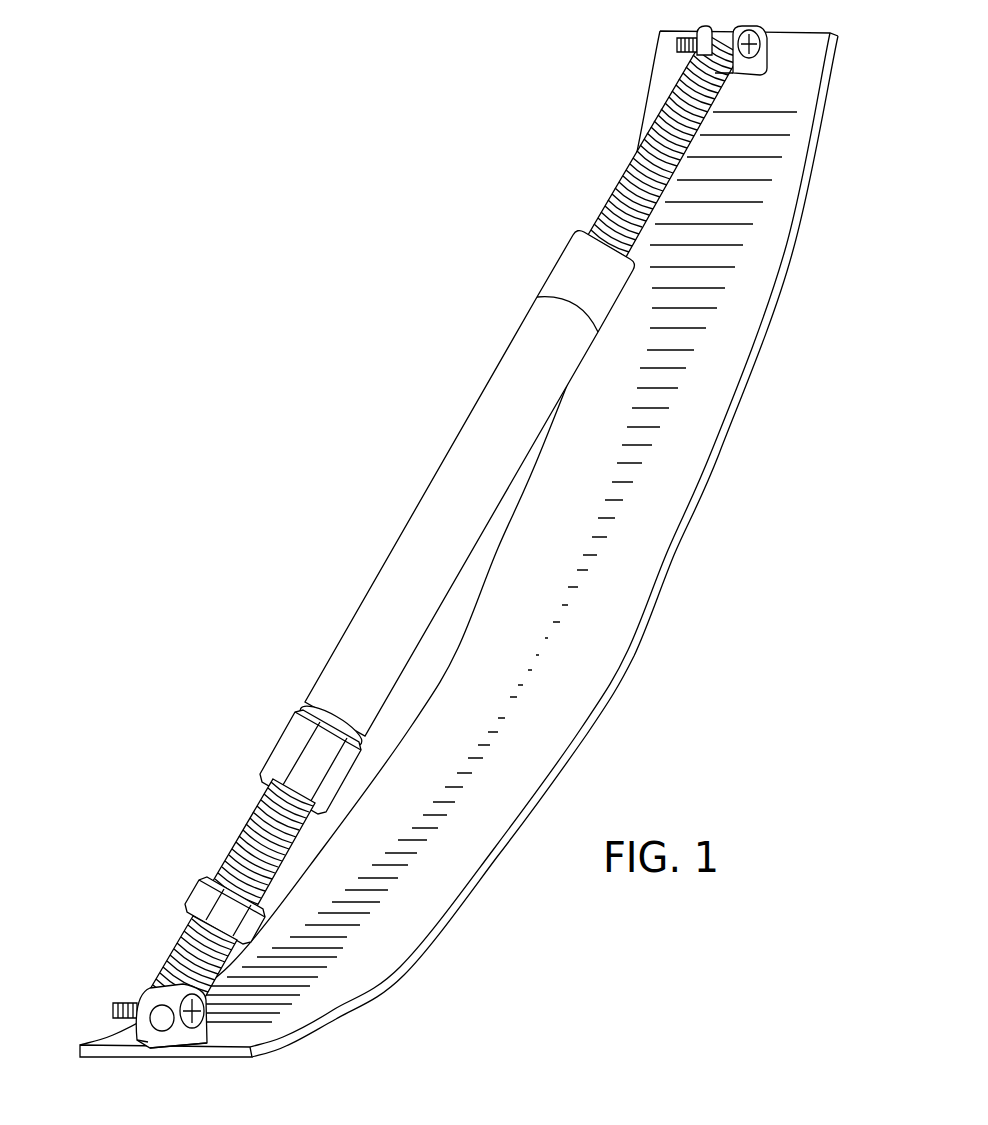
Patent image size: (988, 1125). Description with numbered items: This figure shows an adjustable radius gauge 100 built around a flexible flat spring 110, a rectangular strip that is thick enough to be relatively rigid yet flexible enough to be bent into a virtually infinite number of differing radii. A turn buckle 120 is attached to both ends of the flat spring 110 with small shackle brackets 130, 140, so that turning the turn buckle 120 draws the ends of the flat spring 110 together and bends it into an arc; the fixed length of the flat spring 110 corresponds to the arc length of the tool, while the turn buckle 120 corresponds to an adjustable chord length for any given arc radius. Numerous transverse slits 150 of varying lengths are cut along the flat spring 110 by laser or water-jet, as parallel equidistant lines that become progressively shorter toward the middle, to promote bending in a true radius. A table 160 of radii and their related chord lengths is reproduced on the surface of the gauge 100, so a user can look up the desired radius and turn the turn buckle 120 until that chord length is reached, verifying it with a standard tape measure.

The adjustable radius gauge 100 is at (316, 321).
The flexible flat spring 110 is at (690, 492).
The turn buckle 120 is at (440, 550).
The shackle bracket 130 is at (680, 38).
The shackle bracket 140 is at (125, 1008).
The transverse slits 150 is at (752, 200).
The table of radii and chord lengths 160 is at (710, 408).